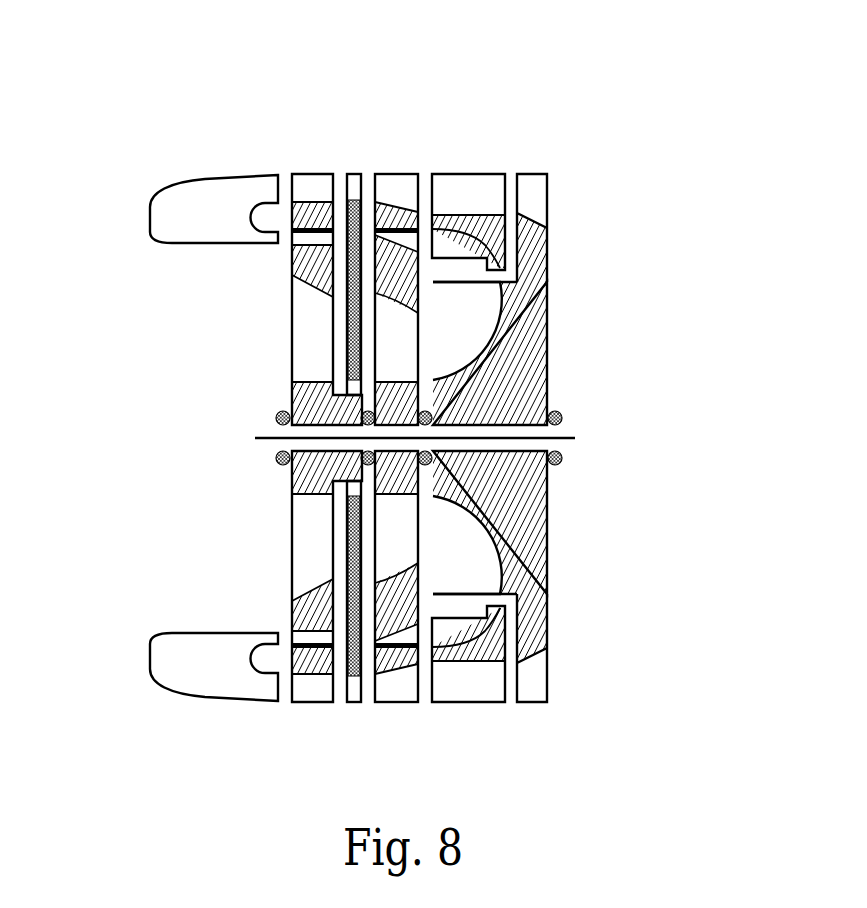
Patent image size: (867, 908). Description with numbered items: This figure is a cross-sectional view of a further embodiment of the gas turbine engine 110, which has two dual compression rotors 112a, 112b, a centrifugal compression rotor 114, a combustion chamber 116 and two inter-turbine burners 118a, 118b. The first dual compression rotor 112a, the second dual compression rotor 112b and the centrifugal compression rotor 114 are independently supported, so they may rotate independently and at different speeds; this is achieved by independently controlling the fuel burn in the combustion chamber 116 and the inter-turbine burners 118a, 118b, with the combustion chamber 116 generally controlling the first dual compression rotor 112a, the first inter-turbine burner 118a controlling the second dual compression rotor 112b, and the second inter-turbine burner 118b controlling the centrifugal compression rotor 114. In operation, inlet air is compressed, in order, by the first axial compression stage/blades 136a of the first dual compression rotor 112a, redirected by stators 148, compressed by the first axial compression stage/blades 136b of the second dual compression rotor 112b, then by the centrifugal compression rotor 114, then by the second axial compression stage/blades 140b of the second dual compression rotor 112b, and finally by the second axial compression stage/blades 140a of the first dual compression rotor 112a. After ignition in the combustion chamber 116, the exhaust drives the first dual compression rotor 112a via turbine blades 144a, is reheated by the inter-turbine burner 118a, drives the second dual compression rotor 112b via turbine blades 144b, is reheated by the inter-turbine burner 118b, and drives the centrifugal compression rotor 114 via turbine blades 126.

The RITE engine 110 is at (188, 98).
The first dual compression rotor 112a is at (323, 170).
The second dual compression rotor 112b is at (413, 170).
The centrifugal compression rotor 114 is at (550, 238).
The combustion chamber 116 is at (168, 197).
The first inter-turbine burner 118a is at (357, 185).
The second inter-turbine burner 118b is at (490, 183).
The tip turbine blades 126 is at (533, 183).
The first axial compression stage/blades of first dual compression rotor 136a is at (300, 372).
The first axial compression stage/blades of second dual compression rotor 136b is at (390, 318).
The second axial compression stage/blades of first dual compression rotor 140a is at (301, 237).
The second axial compression stage/blades of second dual compression rotor 140b is at (378, 231).
The turbine blades of first dual compression rotor 144a is at (303, 185).
The turbine blades of second dual compression rotor 144b is at (398, 183).
The stators 148 is at (350, 348).